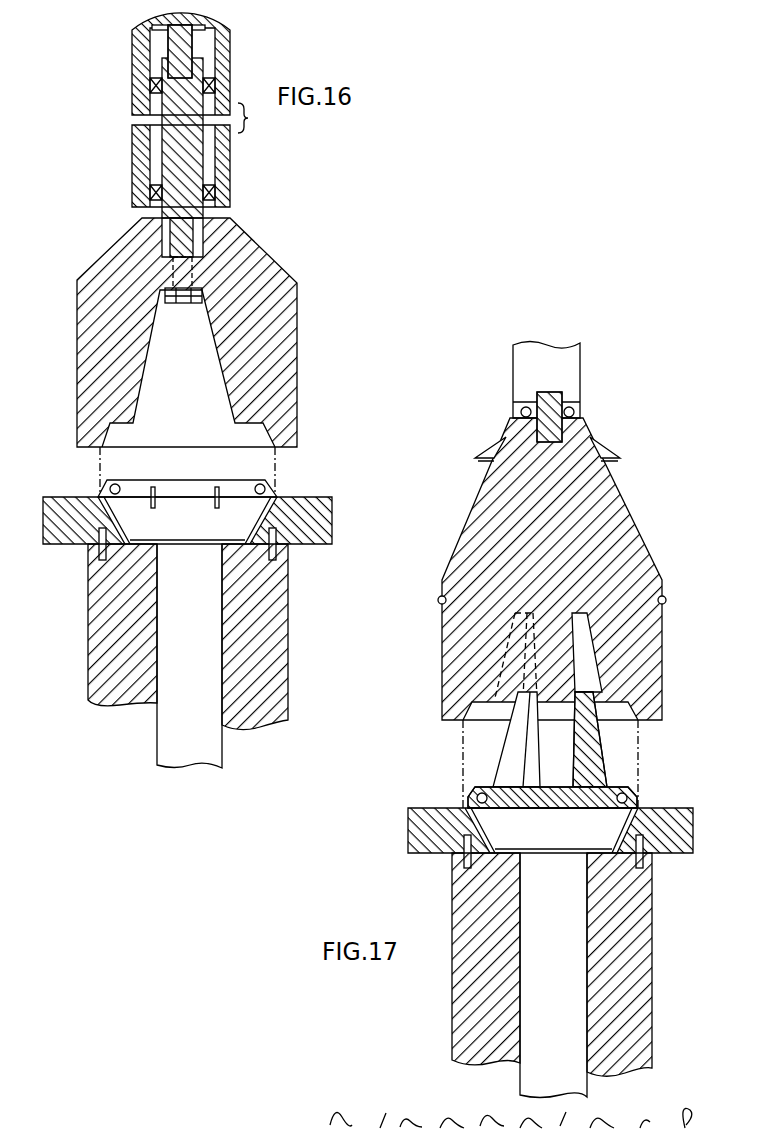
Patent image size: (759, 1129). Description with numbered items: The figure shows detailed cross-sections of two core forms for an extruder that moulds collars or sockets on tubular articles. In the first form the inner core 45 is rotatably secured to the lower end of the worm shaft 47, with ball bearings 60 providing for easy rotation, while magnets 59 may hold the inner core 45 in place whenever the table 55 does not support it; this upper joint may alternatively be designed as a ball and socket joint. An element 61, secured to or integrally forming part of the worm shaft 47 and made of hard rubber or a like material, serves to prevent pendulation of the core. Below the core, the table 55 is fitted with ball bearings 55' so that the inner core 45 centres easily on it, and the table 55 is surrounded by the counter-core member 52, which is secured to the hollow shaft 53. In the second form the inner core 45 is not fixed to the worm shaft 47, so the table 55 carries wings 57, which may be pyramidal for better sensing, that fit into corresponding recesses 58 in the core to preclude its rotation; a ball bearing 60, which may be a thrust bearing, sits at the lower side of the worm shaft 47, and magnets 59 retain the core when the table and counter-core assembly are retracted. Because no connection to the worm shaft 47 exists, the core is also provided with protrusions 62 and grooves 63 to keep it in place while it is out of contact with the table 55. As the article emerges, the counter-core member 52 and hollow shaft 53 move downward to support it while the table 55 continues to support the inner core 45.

In FIG. 16, the inner core 45 is at (278, 380).
In FIG. 17, the inner core 45 is at (620, 531).
In FIG. 16, the worm shaft 47 is at (177, 170).
In FIG. 17, the worm shaft 47 is at (568, 375).
In FIG. 16, the counter-core member 52 is at (320, 524).
In FIG. 16, the hollow shaft 53 is at (270, 636).
In FIG. 17, the hollow shaft 53 is at (633, 960).
In FIG. 16, the table 55 is at (237, 509).
In FIG. 16, the ball bearings 55' is at (177, 474).
In FIG. 17, the wings 57 is at (588, 762).
In FIG. 17, the recesses 58 is at (582, 653).
In FIG. 16, the magnets 59 is at (163, 62).
In FIG. 17, the magnets 59 is at (560, 400).
In FIG. 16, the ball bearing 60 is at (152, 90).
In FIG. 17, the ball bearing 60 is at (520, 412).
In FIG. 16, the element 61 is at (228, 133).
In FIG. 17, the protrusions 62 is at (600, 452).
In FIG. 17, the grooves 63 is at (666, 599).